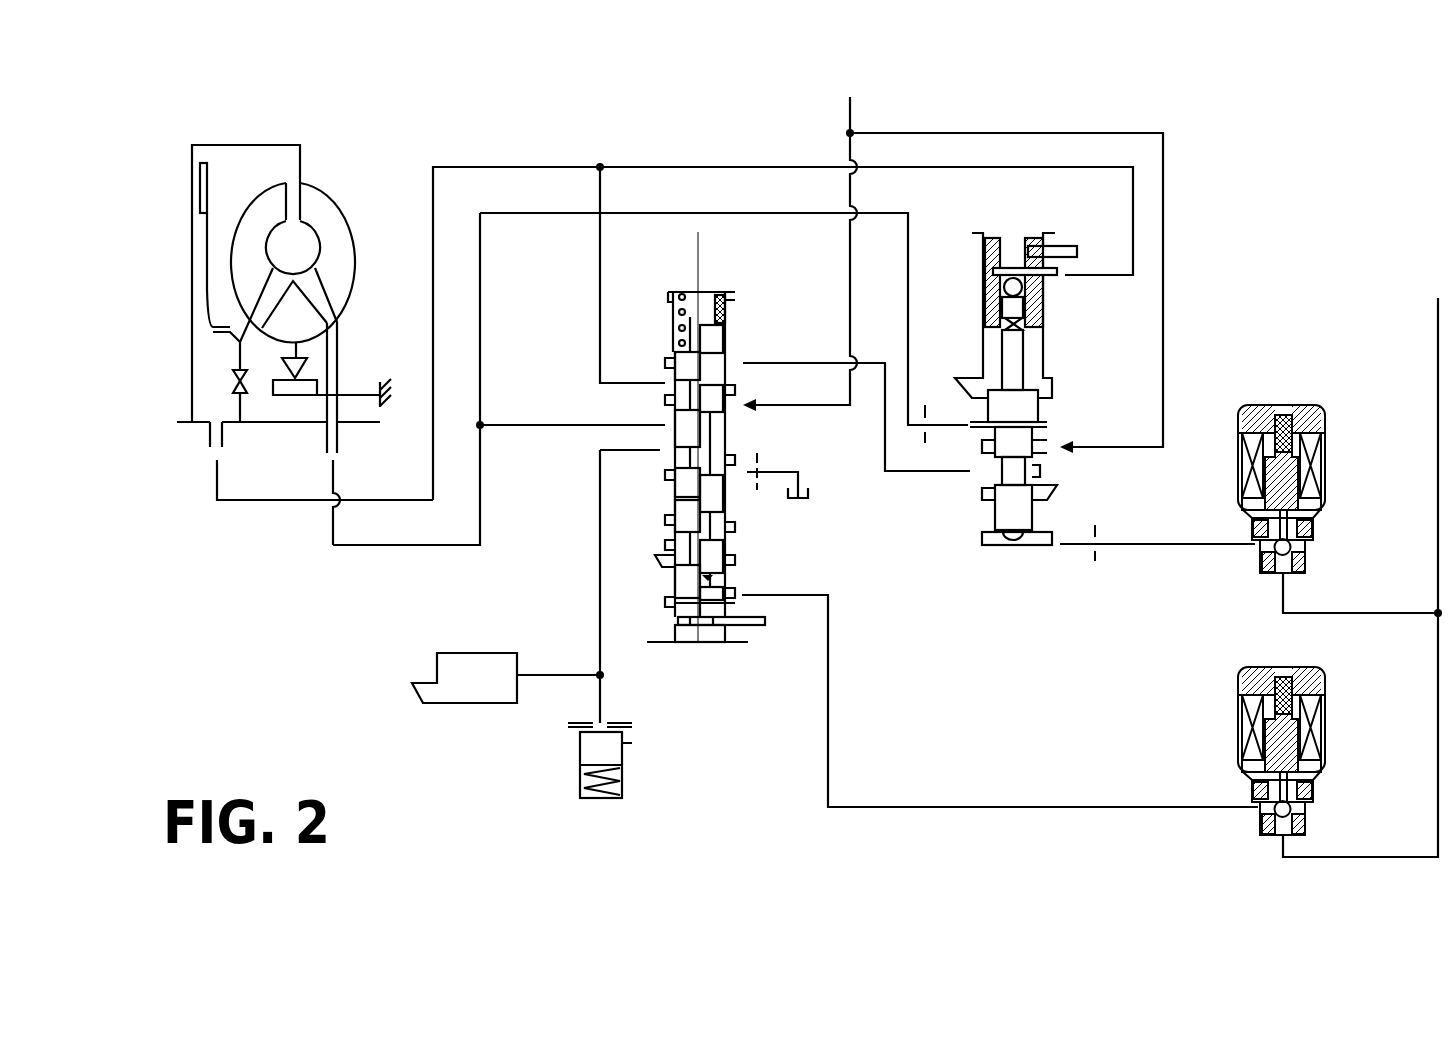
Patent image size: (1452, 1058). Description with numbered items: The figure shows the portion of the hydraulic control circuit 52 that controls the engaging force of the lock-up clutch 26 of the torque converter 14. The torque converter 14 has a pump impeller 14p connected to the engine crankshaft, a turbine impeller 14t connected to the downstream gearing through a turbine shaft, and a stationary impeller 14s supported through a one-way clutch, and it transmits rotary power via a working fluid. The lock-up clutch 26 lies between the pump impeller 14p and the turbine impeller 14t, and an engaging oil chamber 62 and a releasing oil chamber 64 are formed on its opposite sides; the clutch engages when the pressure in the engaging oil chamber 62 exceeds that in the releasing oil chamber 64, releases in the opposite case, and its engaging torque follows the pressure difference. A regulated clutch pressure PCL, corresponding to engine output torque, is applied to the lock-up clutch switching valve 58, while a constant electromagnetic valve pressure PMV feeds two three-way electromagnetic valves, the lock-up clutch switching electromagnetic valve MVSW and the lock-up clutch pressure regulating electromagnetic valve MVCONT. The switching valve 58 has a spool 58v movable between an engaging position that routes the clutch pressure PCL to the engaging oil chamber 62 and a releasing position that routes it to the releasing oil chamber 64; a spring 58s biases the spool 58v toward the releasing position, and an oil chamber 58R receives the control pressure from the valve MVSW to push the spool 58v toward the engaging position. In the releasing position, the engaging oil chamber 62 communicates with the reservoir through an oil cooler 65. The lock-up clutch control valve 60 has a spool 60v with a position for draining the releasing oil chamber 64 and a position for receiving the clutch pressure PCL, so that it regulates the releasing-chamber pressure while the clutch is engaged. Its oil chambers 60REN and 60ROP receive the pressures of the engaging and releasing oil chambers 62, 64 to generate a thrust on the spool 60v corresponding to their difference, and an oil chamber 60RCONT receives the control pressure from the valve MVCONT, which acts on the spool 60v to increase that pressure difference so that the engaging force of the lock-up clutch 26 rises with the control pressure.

The torque converter 14 is at (315, 119).
The engaging oil chamber 62 is at (247, 153).
The lock-up clutch 26 is at (200, 178).
The pump impeller 14p is at (323, 203).
The turbine impeller 14t is at (247, 270).
The stationary impeller 14s is at (293, 288).
The releasing oil chamber 64 is at (207, 367).
The hydraulic control circuit 52 is at (1198, 105).
The lock-up clutch switching valve 58 is at (725, 658).
The spring 58s is at (680, 292).
The spool 58v is at (718, 550).
The oil chamber 58R is at (718, 583).
The oil cooler 65 is at (480, 667).
The lock-up clutch control valve 60 is at (1012, 568).
The oil chamber 60ROP is at (1010, 275).
The spool 60v is at (1013, 367).
The oil chamber 60REN is at (1040, 425).
The oil chamber 60RCONT is at (1030, 546).
The lock-up clutch pressure regulating electromagnetic valve MVCONT is at (1329, 489).
The lock-up clutch switching electromagnetic valve MVSW is at (1319, 751).
The clutch pressure PCL is at (853, 74).
The electromagnetic valve pressure PMV is at (1425, 282).